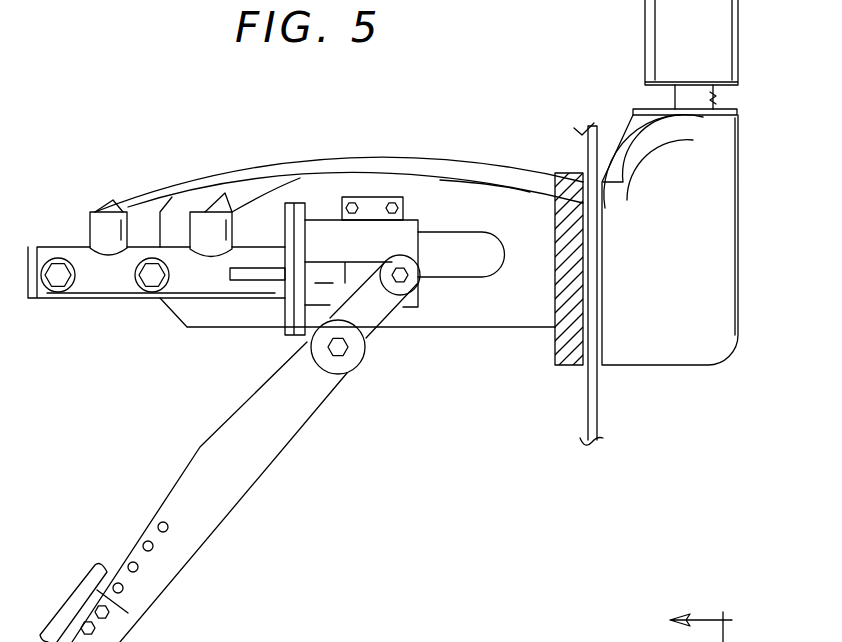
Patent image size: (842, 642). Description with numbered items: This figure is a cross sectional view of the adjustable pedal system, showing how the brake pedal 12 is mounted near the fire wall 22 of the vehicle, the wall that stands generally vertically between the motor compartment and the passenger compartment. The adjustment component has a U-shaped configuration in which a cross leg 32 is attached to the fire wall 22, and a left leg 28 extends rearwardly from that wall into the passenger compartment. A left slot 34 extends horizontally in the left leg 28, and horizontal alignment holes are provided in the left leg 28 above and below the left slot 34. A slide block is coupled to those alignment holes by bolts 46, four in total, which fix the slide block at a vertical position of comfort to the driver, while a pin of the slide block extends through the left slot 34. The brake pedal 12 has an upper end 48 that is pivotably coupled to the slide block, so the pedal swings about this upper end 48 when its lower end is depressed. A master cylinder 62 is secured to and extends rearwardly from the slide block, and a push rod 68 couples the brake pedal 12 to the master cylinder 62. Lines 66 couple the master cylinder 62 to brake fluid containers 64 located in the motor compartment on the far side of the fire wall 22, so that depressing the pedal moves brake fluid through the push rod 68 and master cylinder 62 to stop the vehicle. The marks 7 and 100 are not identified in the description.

The brake pedal 12 is at (200, 445).
The fire wall 22 is at (587, 393).
The left leg 28 is at (478, 305).
The left slot 34 is at (471, 246).
The bolts 46 is at (362, 197).
The upper end 48 is at (385, 305).
The master cylinder 62 is at (97, 275).
The brake fluid containers 64 is at (697, 56).
The lines 66 is at (225, 187).
The push rod 68 is at (323, 257).
The section line 7 is at (711, 613).
The cross leg 32 is at (296, 633).
The assembly 100 is at (531, 637).